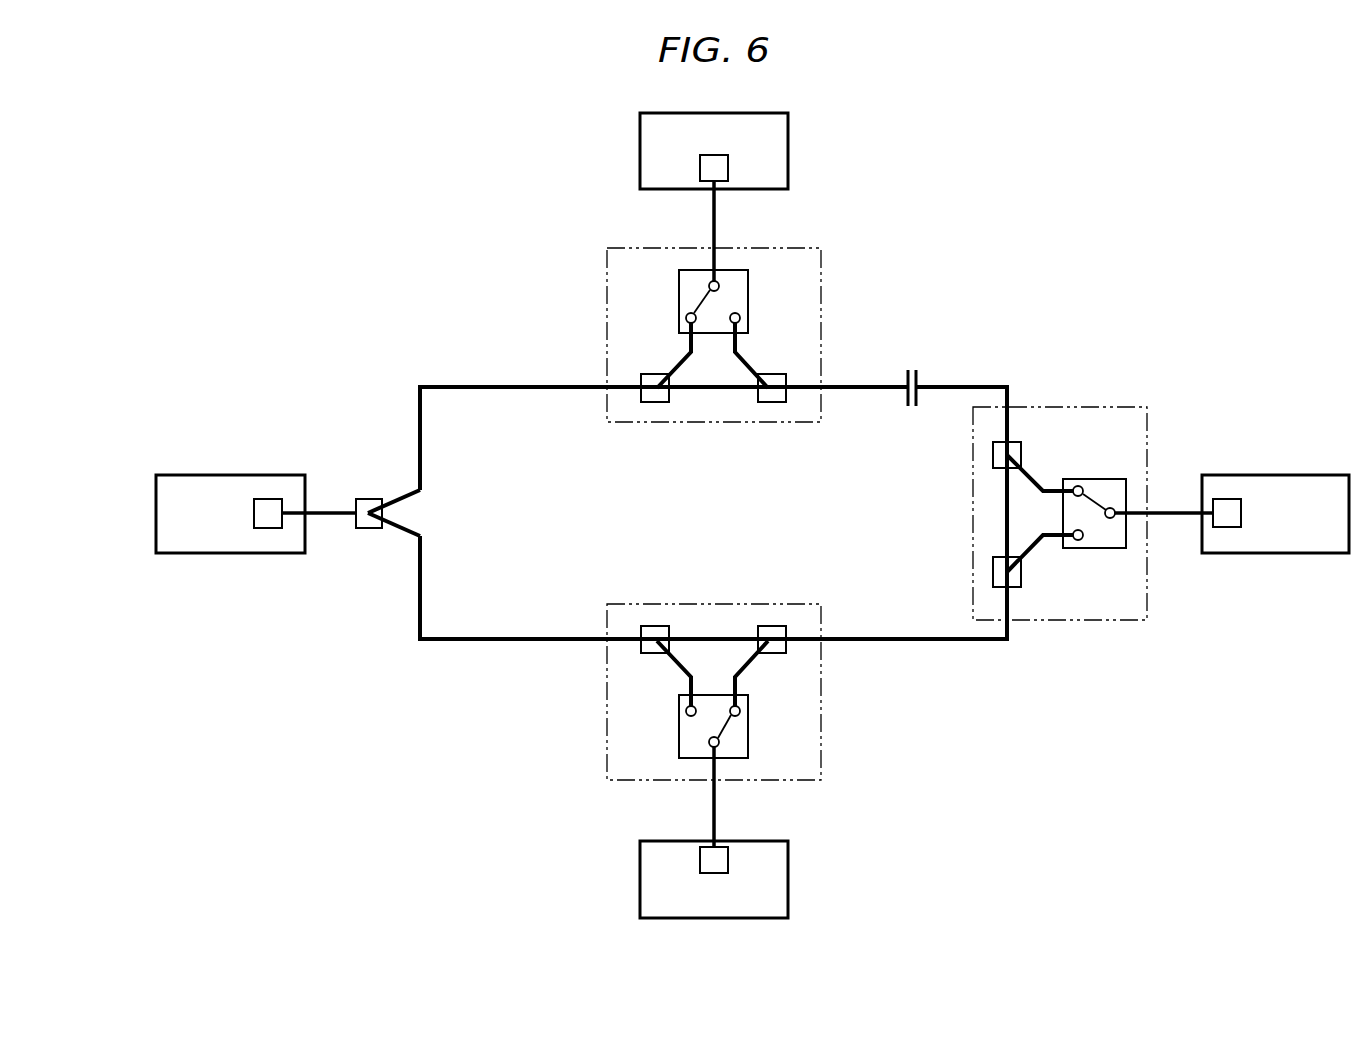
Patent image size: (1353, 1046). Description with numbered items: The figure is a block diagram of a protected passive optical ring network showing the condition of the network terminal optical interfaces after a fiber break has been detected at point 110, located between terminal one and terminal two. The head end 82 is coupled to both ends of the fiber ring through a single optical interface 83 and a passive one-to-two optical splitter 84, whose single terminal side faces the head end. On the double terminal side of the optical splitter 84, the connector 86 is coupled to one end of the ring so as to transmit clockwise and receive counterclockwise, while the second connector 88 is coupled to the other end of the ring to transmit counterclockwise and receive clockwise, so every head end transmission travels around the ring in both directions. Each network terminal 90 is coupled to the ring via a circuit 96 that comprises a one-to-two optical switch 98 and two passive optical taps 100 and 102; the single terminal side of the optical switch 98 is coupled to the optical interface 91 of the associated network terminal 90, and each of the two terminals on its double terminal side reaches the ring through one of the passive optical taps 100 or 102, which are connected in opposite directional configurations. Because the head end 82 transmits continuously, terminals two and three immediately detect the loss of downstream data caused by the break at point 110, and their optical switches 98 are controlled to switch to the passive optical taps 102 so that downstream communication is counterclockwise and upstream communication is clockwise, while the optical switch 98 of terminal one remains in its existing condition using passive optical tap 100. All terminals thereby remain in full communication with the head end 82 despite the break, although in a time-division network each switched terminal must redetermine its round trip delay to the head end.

The head end 82 is at (228, 475).
The optical interface 83 is at (268, 528).
The passive 1:2 optical splitter 84 is at (370, 499).
The connector 86 is at (410, 496).
The second connector 88 is at (406, 532).
The network terminal 90 is at (788, 150).
The optical interface 91 is at (728, 165).
The circuit 96 is at (605, 314).
The 1:2 optical switch 98 is at (748, 300).
The passive optical tap 100 is at (655, 402).
The passive optical tap 102 is at (775, 402).
The point of fiber break 110 is at (917, 380).